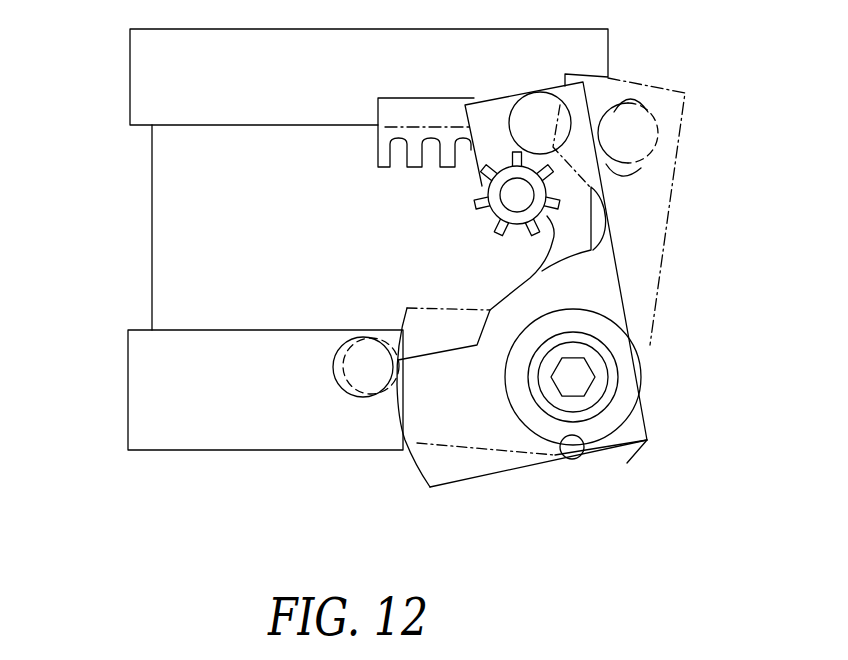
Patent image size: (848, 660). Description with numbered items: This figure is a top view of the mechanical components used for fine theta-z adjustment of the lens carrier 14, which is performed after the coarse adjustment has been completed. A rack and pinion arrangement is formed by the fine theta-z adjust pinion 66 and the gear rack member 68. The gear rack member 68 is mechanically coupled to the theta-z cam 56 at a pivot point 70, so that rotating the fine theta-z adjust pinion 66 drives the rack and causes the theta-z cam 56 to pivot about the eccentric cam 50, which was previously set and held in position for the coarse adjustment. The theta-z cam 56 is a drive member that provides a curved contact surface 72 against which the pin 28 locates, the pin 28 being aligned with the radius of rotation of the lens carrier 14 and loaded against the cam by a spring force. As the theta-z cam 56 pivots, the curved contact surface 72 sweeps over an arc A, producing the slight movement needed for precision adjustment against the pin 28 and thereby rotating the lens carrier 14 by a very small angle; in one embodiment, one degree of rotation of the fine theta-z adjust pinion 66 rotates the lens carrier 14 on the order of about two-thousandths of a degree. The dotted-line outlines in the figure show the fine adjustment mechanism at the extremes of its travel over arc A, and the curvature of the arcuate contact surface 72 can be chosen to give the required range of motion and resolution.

The lens carrier 14 is at (130, 75).
The gear rack member 68 is at (378, 107).
The pivot point 70 is at (540, 98).
The fine theta-z adjust pinion 66 is at (492, 217).
The pin 28 is at (360, 392).
The eccentric cam 50 is at (643, 388).
The theta-z cam 56 is at (520, 468).
The contact surface 72 is at (413, 472).
The arc A is at (405, 447).